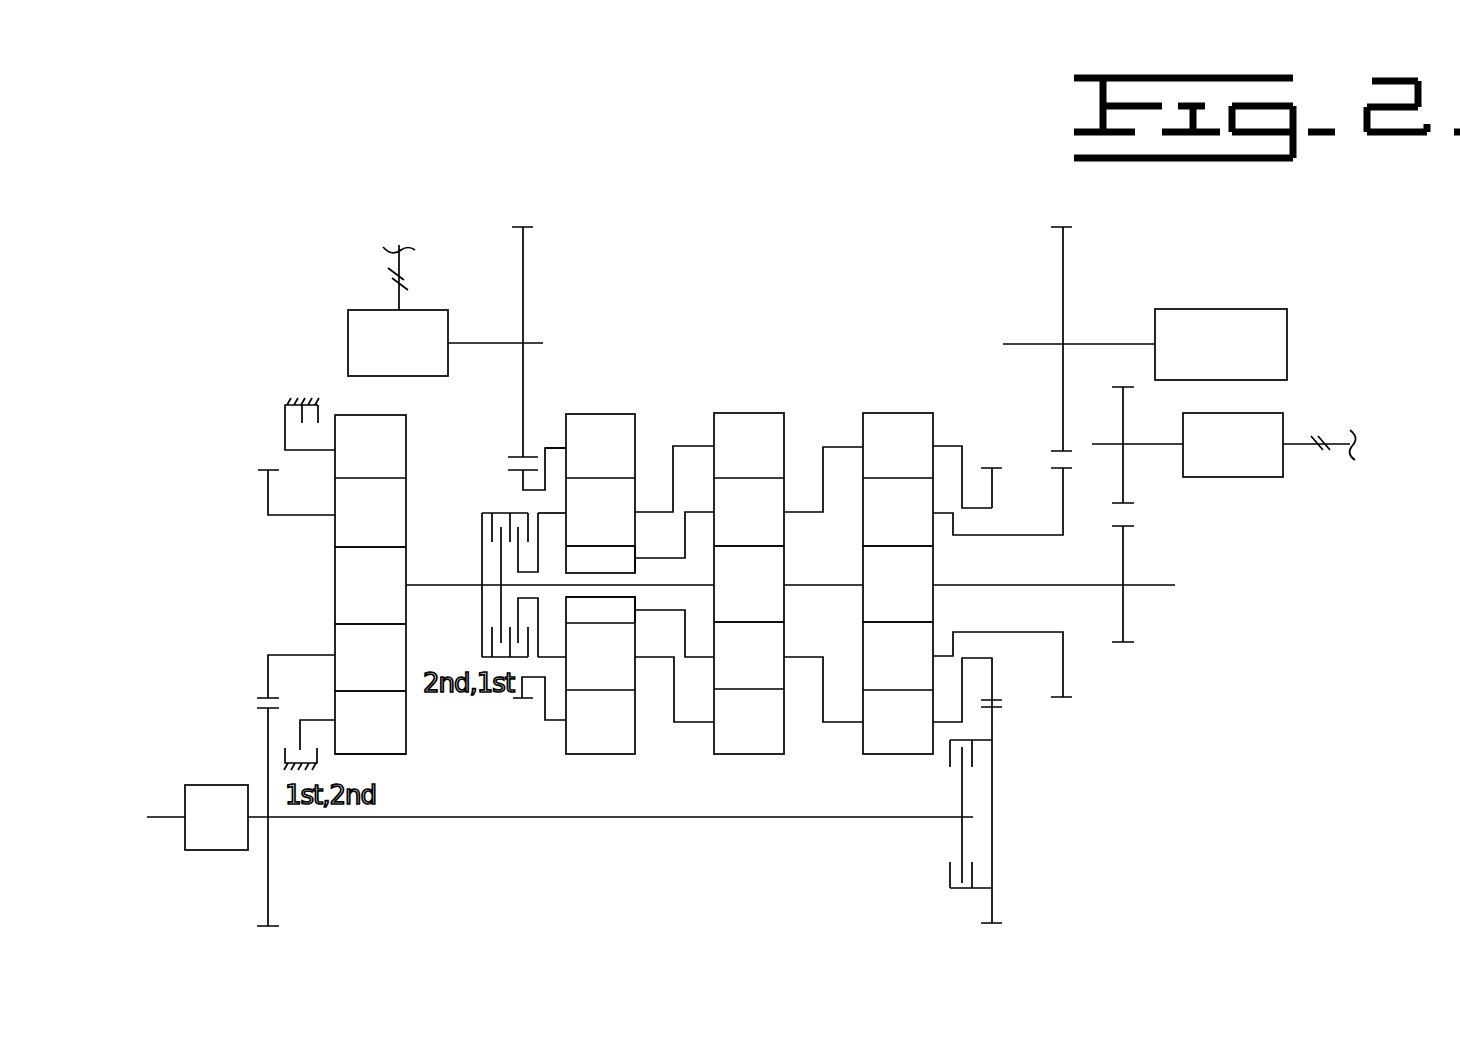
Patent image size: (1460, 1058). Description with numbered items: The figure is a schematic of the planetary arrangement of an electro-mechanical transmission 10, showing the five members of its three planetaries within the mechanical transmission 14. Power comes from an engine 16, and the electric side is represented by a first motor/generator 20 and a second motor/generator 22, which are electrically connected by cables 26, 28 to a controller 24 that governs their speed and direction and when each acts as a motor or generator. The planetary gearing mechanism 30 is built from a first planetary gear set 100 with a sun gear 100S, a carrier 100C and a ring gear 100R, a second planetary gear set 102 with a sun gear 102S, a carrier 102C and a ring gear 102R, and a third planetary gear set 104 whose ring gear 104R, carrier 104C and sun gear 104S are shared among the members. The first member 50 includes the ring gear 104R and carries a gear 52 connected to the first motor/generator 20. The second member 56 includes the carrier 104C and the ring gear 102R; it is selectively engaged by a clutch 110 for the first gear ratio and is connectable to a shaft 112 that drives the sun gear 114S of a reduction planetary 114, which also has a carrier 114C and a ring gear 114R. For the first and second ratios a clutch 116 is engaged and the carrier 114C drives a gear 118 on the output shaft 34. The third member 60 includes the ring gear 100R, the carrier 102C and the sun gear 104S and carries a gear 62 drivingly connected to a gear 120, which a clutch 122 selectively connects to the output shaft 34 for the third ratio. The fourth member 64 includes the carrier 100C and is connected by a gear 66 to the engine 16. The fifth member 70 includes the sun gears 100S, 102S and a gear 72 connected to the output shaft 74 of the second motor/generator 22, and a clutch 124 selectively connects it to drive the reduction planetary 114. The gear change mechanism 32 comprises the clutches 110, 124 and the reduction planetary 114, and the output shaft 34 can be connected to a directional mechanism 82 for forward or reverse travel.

The electro-mechanical transmission 10 is at (284, 584).
The mechanical transmission 14 is at (680, 892).
The engine 16 is at (1220, 309).
The first motor/generator 20 is at (355, 309).
The second motor/generator 22 is at (1256, 478).
The controller 24 is at (499, 342).
The cable 26 is at (395, 270).
The cable 28 is at (1335, 444).
The planetary gearing mechanism 30 is at (792, 362).
The gear change mechanism 32 is at (496, 842).
The output shaft 34 is at (590, 818).
The first member 50 is at (550, 448).
The gear 52 is at (517, 472).
The second member 56 is at (546, 511).
The third member 60 is at (950, 446).
The gear 62 is at (992, 487).
The fourth member 64 is at (985, 537).
The gear 66 is at (1063, 507).
The fifth member 70 is at (1050, 584).
The gear 72 is at (1126, 563).
The output shaft of the second motor/generator 74 is at (1152, 446).
The directional mechanism 82 is at (213, 784).
The first planetary gear set 100 is at (913, 564).
The carrier 100C is at (867, 656).
The ring gear 100R is at (933, 755).
The sun gear 100S is at (931, 600).
The second planetary gear set 102 is at (793, 556).
The carrier 102C is at (785, 675).
The ring gear 102R is at (723, 755).
The sun gear 102S is at (822, 550).
The third planetary gear set 104 is at (644, 528).
The carrier 104C is at (636, 494).
The ring gear 104R is at (637, 414).
The sun gear 104S is at (633, 560).
The clutch 110 is at (489, 568).
The shaft 112 is at (465, 555).
The reduction planetary 114 is at (385, 660).
The carrier 114C is at (370, 657).
The ring gear 114R is at (370, 722).
The sun gear 114S is at (370, 585).
The clutch 116 is at (287, 417).
The gear 118 is at (267, 742).
The gear 120 is at (993, 725).
The clutch 122 is at (950, 876).
The clutch 124 is at (483, 527).